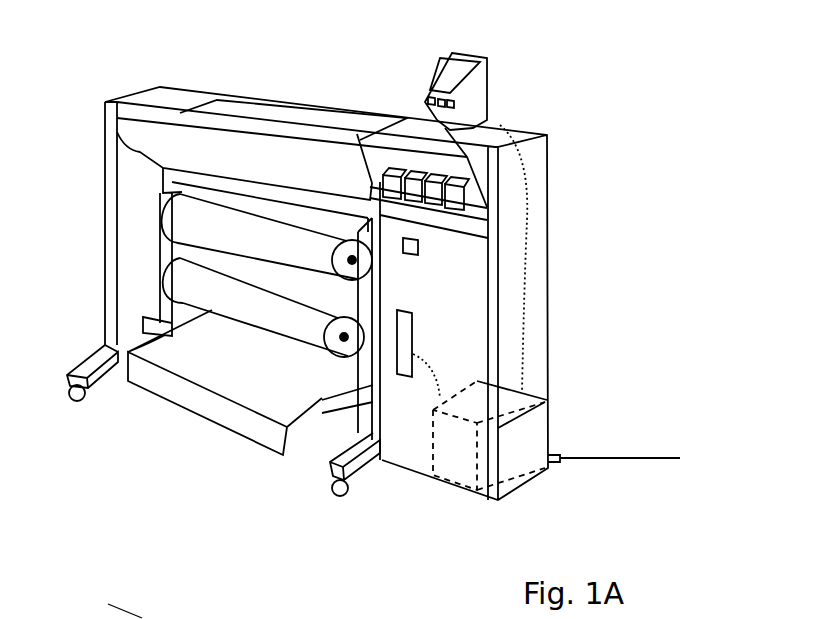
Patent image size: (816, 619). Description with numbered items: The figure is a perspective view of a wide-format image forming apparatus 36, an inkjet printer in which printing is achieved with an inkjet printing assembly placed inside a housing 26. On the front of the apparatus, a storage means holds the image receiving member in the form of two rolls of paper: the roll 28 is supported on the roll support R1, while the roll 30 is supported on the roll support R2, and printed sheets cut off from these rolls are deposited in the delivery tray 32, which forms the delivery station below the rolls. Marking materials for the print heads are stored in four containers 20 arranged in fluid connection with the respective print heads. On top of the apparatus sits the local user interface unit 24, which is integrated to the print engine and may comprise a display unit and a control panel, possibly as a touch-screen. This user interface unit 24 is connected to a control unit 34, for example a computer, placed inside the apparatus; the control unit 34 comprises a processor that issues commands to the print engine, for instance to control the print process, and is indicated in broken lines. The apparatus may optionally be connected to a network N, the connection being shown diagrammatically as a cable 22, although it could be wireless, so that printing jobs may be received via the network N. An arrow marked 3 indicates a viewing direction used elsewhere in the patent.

The image forming apparatus 36 is at (321, 84).
The user interface unit 24 is at (483, 84).
The housing 26 is at (182, 145).
The containers 20 is at (453, 200).
The roll 28 is at (228, 217).
The roll 30 is at (228, 281).
The roll support R1 is at (160, 226).
The roll support R2 is at (160, 288).
The delivery tray 32 is at (217, 420).
The control unit 34 is at (540, 422).
The cable 22 is at (645, 458).
The network N is at (703, 455).
The view direction of FIG. 3 is at (384, 606).